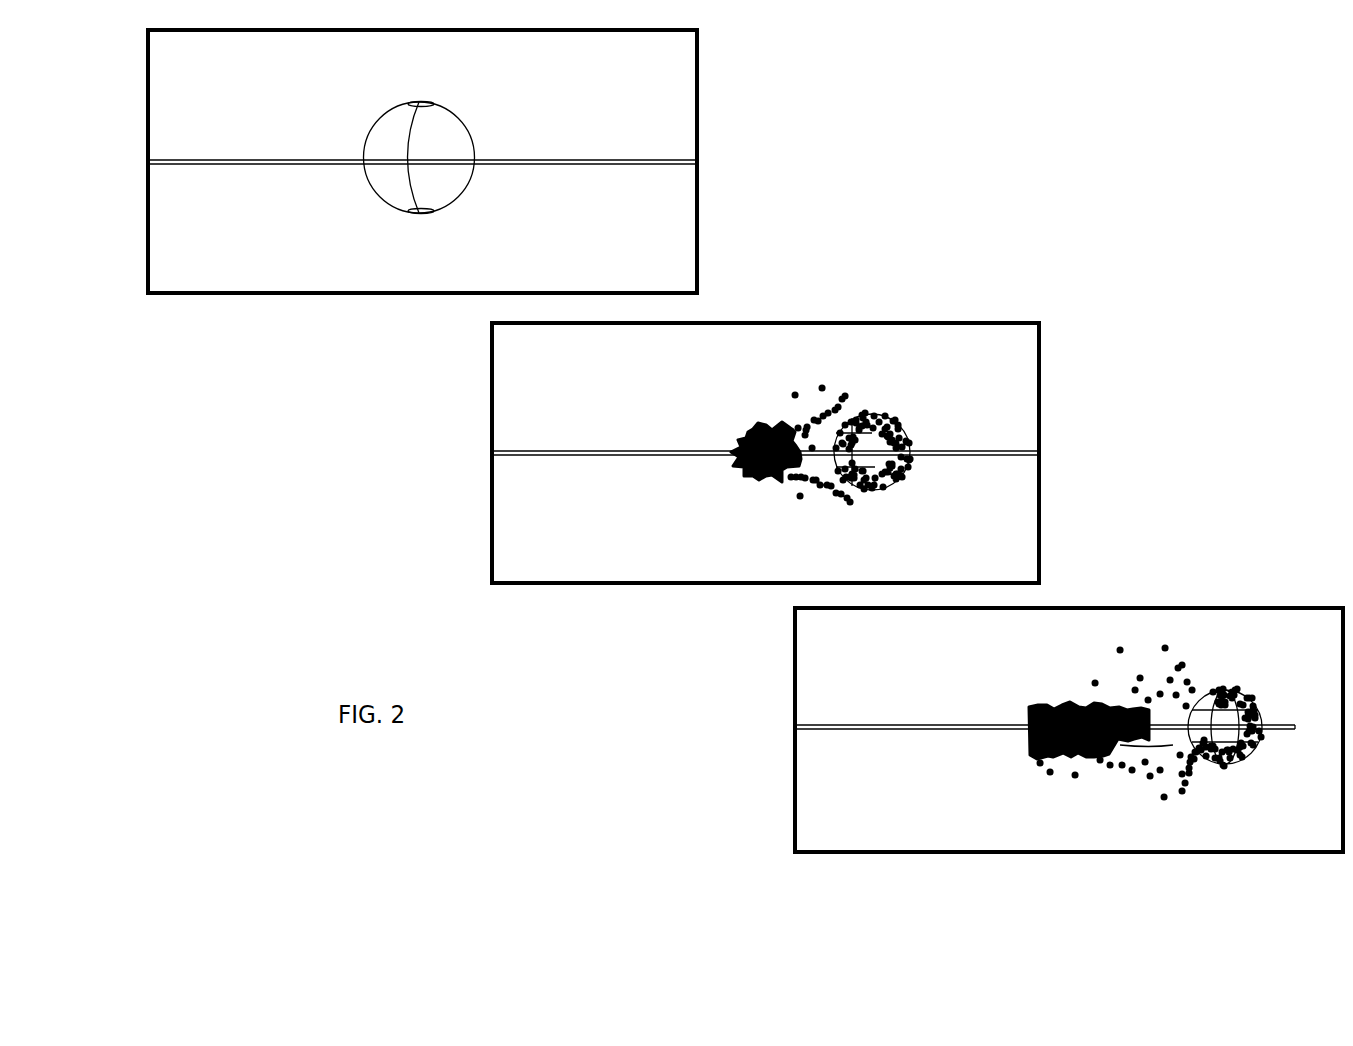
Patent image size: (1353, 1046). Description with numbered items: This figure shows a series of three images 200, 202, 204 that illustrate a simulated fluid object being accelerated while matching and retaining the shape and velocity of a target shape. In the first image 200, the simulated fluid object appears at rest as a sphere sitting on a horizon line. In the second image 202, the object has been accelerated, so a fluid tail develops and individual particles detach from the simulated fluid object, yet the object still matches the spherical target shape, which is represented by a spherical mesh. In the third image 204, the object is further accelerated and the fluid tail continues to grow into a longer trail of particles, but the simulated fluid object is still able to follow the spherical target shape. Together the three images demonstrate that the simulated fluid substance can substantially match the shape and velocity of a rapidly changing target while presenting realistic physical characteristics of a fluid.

The image 200 is at (697, 111).
The image 202 is at (1039, 413).
The image 204 is at (1247, 607).